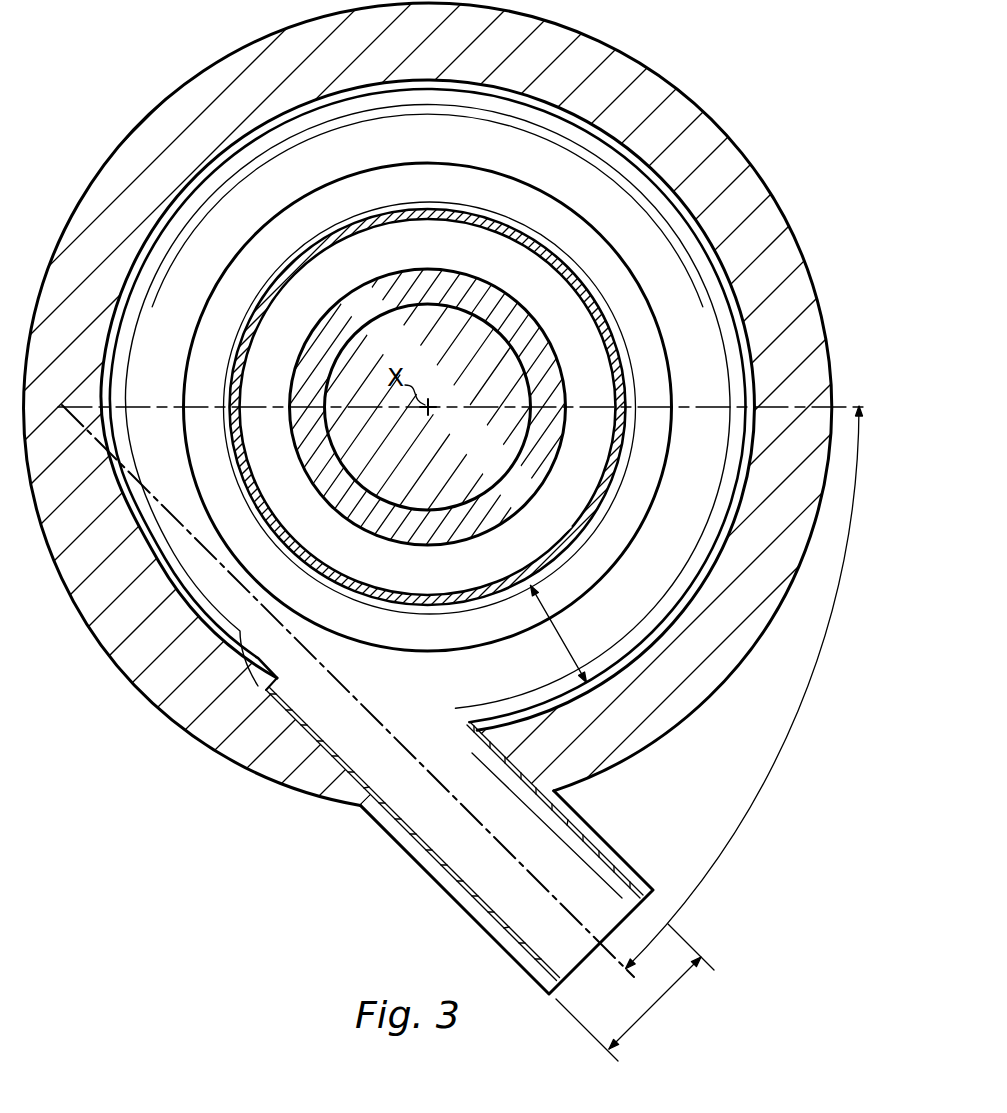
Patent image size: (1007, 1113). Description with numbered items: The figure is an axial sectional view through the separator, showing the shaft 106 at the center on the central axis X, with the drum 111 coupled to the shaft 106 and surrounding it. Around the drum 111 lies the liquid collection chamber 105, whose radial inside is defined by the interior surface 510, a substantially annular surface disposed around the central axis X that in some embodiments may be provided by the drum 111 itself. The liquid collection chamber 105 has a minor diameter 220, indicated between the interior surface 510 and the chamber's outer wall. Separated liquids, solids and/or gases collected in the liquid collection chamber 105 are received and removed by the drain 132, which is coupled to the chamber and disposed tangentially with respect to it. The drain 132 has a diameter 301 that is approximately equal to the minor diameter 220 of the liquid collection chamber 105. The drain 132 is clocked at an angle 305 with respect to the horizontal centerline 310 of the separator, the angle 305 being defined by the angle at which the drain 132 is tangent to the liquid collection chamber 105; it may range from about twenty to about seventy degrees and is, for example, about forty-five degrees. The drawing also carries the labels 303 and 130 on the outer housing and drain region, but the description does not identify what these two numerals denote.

The liquid collection chamber 105 is at (294, 167).
The shaft 106 is at (425, 470).
The drum 111 is at (438, 208).
The interior surface 510 is at (492, 212).
The horizontal centerline 310 is at (688, 407).
The minor diameter 220 is at (562, 652).
The angle 305 is at (800, 708).
The housing 303 is at (232, 755).
The outlet 130 is at (320, 727).
The drain 132 is at (453, 897).
The diameter 301 is at (659, 998).